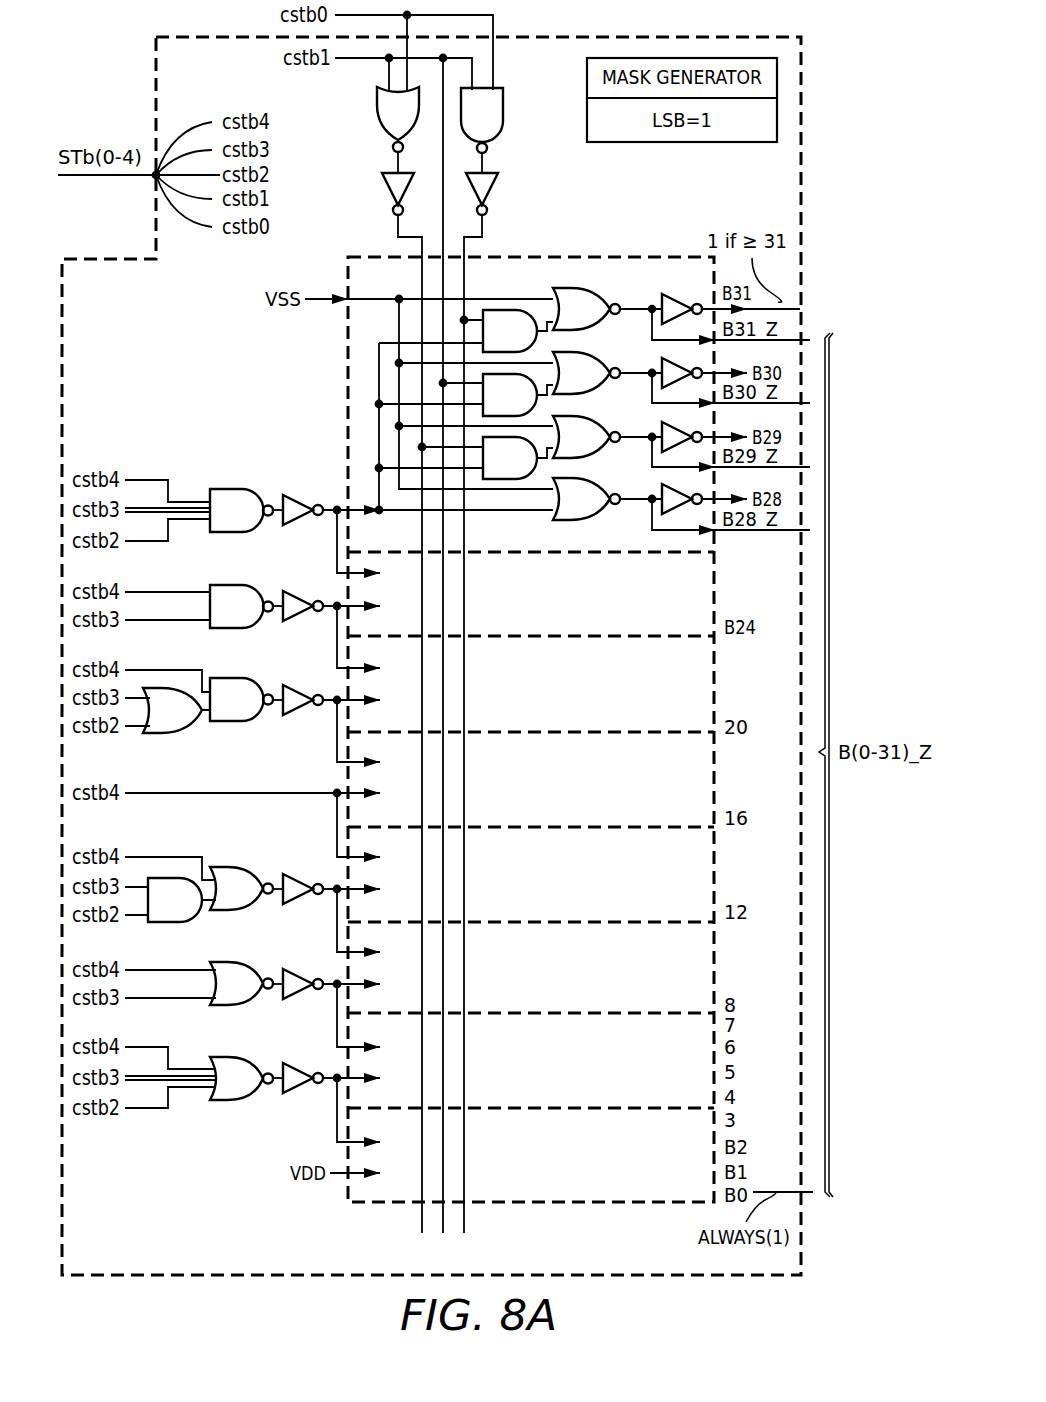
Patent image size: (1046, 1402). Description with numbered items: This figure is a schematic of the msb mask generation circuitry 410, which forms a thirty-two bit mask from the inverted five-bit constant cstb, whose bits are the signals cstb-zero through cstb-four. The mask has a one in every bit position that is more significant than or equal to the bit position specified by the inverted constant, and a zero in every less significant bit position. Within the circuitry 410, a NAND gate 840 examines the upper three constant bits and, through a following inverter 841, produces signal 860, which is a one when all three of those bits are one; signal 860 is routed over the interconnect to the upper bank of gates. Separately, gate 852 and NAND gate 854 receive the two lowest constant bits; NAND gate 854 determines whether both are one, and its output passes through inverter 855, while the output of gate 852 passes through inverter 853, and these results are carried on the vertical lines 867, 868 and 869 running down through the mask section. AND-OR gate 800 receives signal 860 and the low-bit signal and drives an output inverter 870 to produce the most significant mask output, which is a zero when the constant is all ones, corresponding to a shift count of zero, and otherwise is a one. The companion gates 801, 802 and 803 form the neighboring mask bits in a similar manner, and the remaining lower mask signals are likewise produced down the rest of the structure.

The msb mask generation circuitry 410 is at (802, 163).
The NOR gate 852 is at (377, 106).
The inverter 853 is at (386, 188).
The NAND gate 854 is at (504, 110).
The signal 855 is at (498, 189).
The output inverter 870 is at (662, 296).
The AND-OR gate 800 is at (602, 326).
The NOR gate 801 is at (602, 390).
The NOR gate 802 is at (602, 454).
The NOR gate 803 is at (602, 516).
The signal 860 is at (379, 375).
The NAND gate 840 is at (222, 489).
The inverter 841 is at (299, 496).
The signal line 867 is at (422, 1215).
The signal line 868 is at (444, 1228).
The signal line 869 is at (464, 1215).